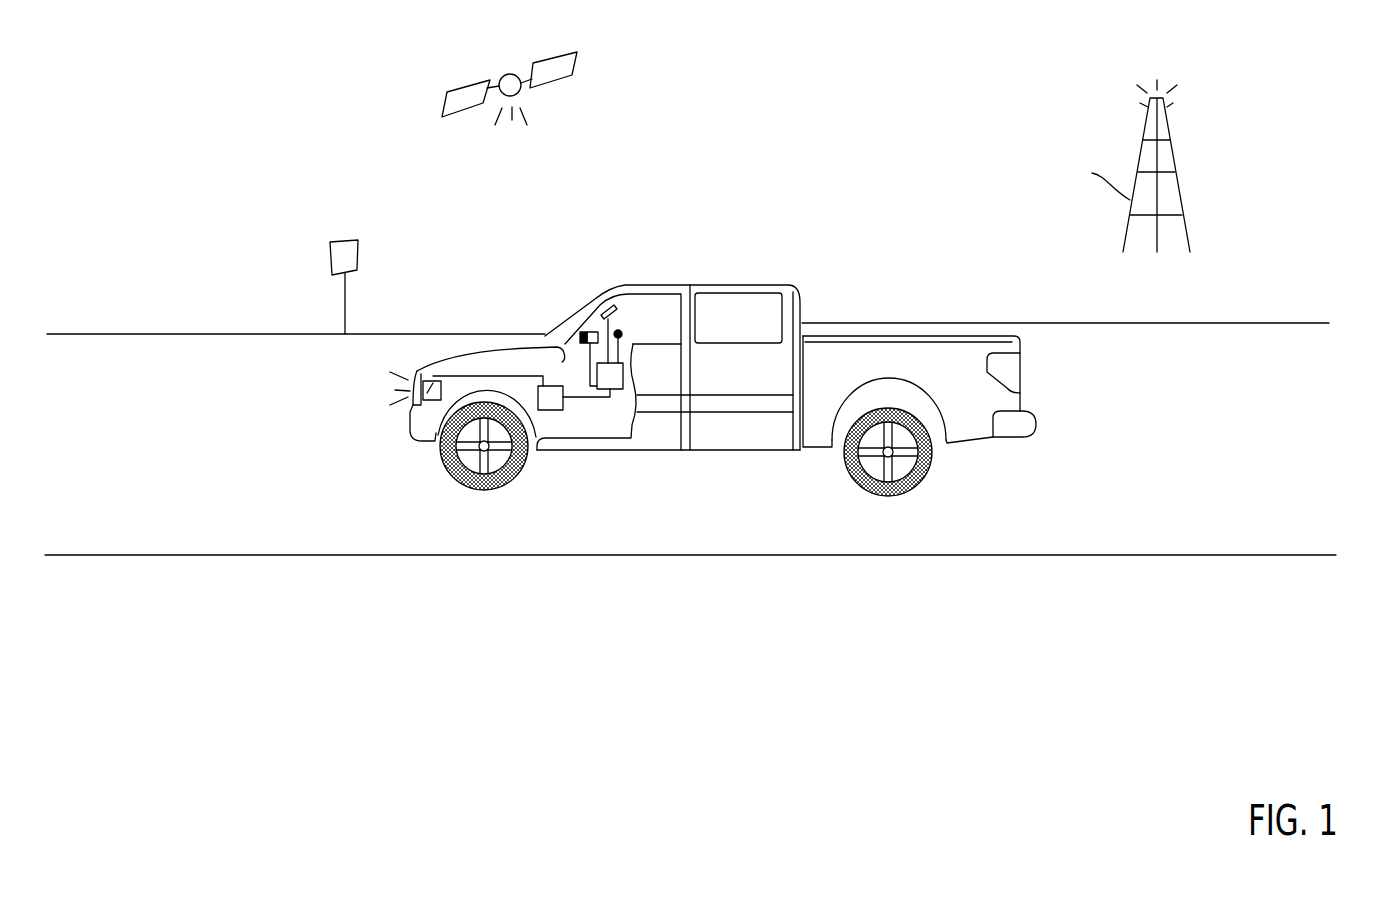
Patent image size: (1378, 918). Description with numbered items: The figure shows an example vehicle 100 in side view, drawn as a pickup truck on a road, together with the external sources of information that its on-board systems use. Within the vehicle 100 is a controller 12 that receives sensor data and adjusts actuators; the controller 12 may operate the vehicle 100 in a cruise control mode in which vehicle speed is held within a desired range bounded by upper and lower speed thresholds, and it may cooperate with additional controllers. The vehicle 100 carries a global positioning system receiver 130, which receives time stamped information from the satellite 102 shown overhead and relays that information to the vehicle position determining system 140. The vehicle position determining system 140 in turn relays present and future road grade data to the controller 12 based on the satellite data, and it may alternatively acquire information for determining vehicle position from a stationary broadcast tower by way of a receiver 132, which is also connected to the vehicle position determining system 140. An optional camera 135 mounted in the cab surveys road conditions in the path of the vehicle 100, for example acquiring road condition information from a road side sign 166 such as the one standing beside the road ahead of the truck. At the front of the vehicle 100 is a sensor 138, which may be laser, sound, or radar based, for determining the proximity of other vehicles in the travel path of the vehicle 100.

The vehicle 100 is at (955, 445).
The satellite 102 is at (504, 77).
The controller 12 is at (548, 411).
The global positioning system (GPS) receiver 130 is at (617, 313).
The receiver 132 is at (622, 333).
The camera 135 is at (588, 346).
The sensor 138 is at (414, 416).
The vehicle position determining system 140 is at (615, 389).
The road side sign 166 is at (330, 263).